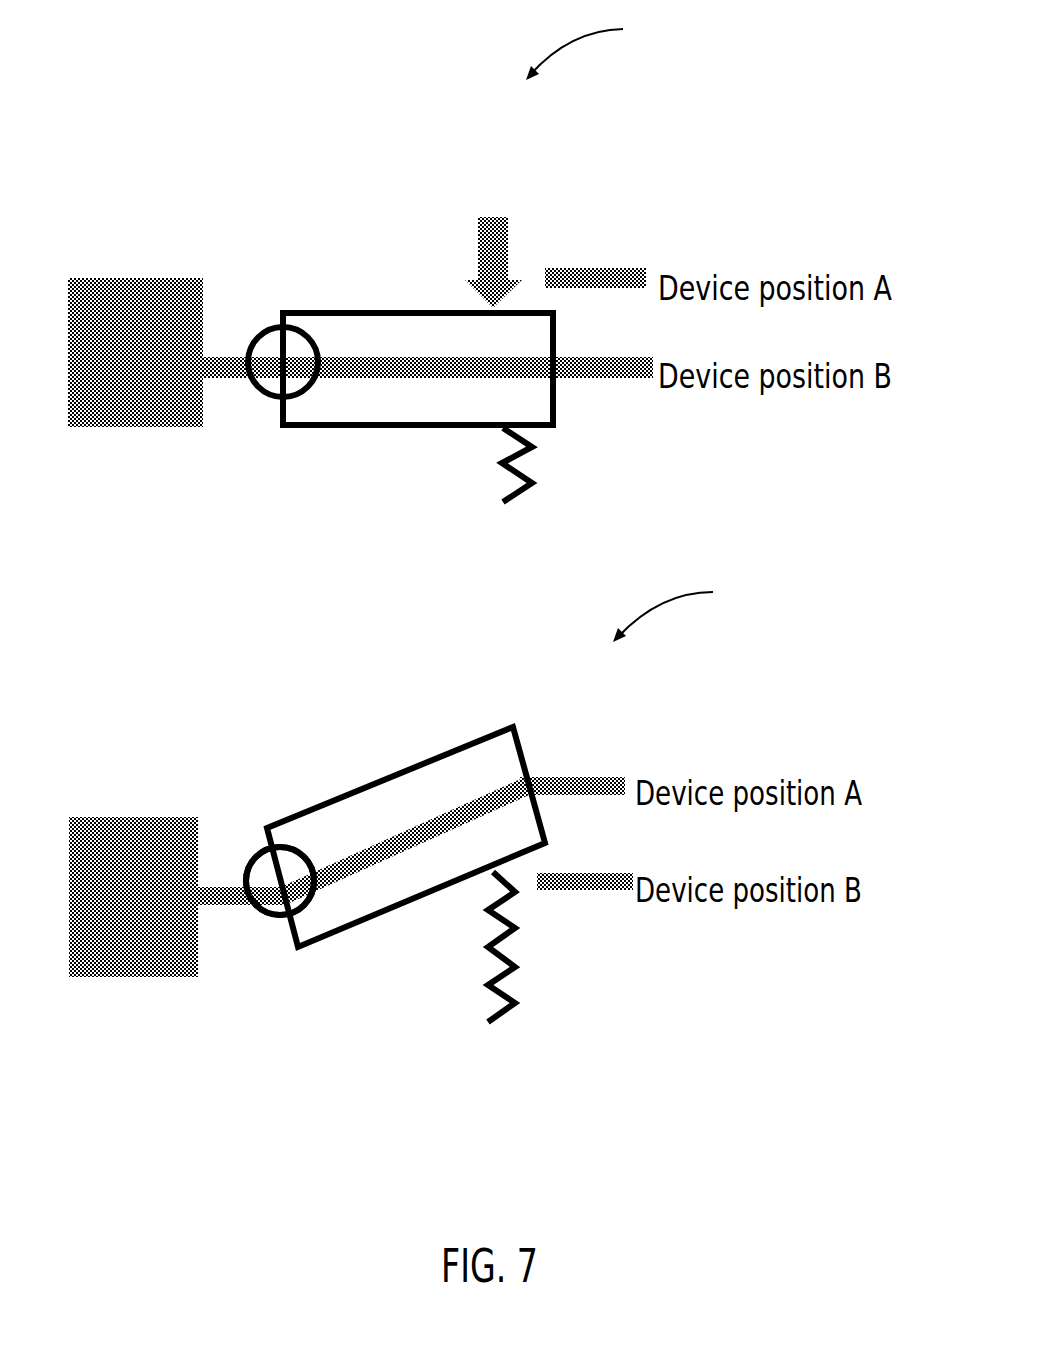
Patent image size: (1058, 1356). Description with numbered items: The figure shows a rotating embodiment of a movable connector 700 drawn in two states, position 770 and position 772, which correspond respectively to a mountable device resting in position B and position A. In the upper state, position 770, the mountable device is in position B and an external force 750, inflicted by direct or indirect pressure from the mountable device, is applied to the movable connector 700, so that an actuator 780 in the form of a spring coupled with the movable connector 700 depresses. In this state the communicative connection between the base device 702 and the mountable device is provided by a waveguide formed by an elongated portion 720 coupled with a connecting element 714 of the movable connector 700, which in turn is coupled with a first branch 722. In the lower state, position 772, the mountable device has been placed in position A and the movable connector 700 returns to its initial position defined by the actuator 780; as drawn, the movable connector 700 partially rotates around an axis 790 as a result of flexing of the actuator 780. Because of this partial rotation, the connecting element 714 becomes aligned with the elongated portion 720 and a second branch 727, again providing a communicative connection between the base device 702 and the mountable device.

The position 770 is at (623, 48).
The position 772 is at (710, 610).
The device 702 is at (168, 278).
The movable connector 700 is at (327, 310).
The external force 750 is at (491, 218).
The elongated portion 720 is at (220, 378).
The connecting element 714 is at (388, 378).
The first branch 722 is at (603, 373).
The second branch 727 is at (590, 773).
The actuator 780 is at (530, 490).
The axis 790 is at (267, 920).